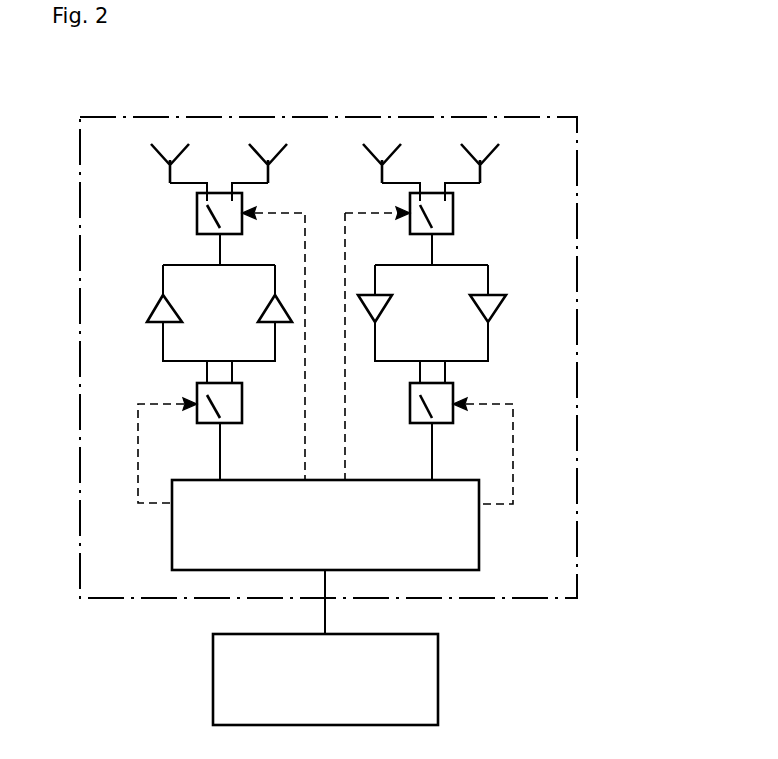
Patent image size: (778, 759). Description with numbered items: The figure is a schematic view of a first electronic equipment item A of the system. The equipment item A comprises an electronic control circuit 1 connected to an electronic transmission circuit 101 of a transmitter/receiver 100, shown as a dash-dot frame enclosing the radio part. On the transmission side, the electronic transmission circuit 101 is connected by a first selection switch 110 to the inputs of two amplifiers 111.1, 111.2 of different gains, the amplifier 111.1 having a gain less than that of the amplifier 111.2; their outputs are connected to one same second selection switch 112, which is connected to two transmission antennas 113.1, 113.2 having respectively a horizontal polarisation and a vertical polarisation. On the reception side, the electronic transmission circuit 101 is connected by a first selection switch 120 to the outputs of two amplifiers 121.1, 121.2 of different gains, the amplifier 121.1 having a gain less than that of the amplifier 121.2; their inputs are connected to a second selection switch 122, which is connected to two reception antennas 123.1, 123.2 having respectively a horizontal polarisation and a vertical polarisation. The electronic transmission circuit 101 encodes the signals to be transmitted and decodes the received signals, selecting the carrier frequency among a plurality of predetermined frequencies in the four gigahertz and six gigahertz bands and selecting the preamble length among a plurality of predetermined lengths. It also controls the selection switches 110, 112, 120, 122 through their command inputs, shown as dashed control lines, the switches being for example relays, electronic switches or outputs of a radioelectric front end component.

The electronic control circuit 1 is at (325, 679).
The transmitter/receiver 100 is at (577, 578).
The electronic transmission circuit 101 is at (325, 525).
The first selection switch 110 is at (196, 387).
The amplifier 111.1 is at (160, 304).
The amplifier 111.2 is at (264, 320).
The second selection switch 112 is at (196, 213).
The transmission antenna 113.1 is at (182, 147).
The transmission antenna 113.2 is at (280, 147).
The first selection switch 120 is at (453, 390).
The amplifier 121.1 is at (380, 308).
The amplifier 121.2 is at (500, 296).
The second selection switch 122 is at (453, 213).
The reception antenna 123.1 is at (396, 147).
The reception antenna 123.2 is at (492, 147).
The electronic equipment item A is at (598, 306).